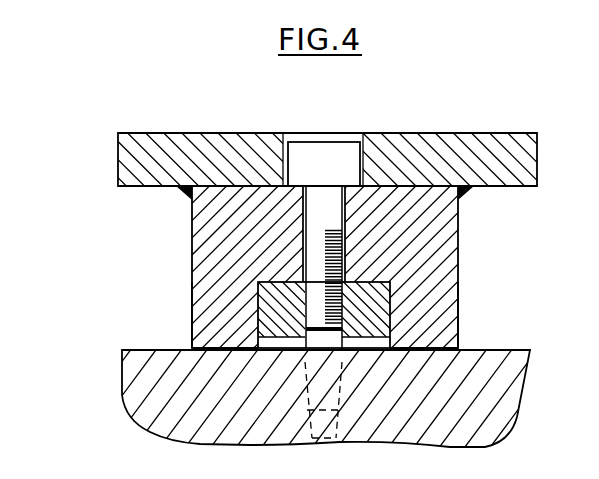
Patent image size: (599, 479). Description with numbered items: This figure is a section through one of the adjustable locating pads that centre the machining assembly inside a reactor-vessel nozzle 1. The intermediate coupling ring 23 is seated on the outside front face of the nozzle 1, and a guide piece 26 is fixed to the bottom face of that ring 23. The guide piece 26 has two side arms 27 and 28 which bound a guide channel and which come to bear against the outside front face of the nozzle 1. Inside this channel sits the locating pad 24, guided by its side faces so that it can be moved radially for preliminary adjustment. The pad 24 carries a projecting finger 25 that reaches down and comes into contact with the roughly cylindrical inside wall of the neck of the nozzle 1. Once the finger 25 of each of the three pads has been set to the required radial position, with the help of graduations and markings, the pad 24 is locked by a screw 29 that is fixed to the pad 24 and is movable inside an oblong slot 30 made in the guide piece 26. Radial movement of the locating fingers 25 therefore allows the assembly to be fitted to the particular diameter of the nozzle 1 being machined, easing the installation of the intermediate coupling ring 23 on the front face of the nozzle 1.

The nozzle 1 is at (488, 385).
The intermediate coupling ring 23 is at (172, 160).
The locating pad 24 is at (372, 303).
The projecting finger 25 is at (318, 382).
The guide piece 26 is at (228, 238).
The side arm 27 is at (228, 320).
The side arm 28 is at (422, 327).
The screw 29 is at (306, 165).
The oblong slot 30 is at (348, 222).